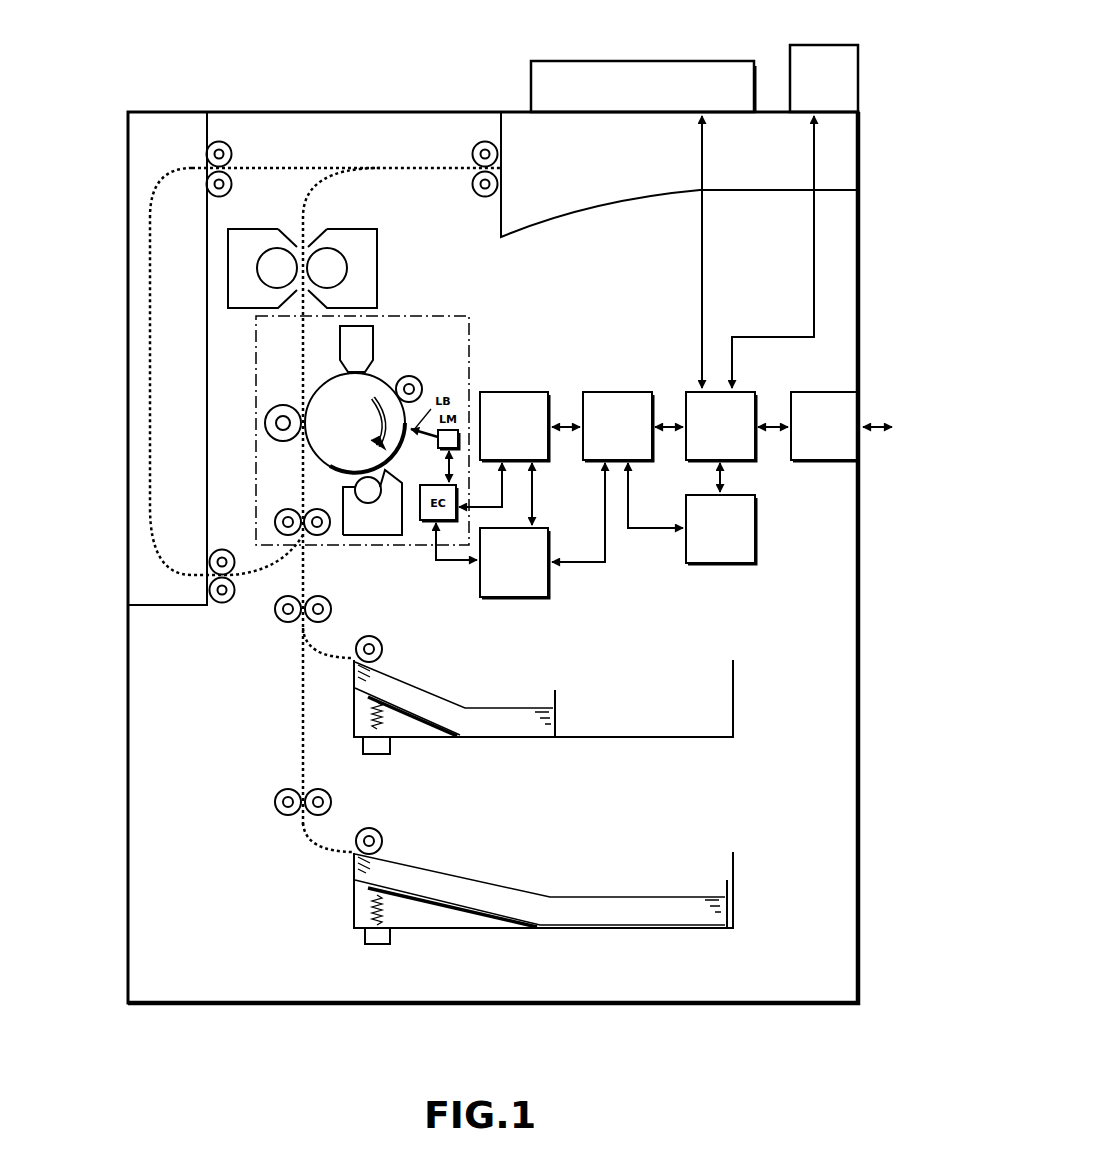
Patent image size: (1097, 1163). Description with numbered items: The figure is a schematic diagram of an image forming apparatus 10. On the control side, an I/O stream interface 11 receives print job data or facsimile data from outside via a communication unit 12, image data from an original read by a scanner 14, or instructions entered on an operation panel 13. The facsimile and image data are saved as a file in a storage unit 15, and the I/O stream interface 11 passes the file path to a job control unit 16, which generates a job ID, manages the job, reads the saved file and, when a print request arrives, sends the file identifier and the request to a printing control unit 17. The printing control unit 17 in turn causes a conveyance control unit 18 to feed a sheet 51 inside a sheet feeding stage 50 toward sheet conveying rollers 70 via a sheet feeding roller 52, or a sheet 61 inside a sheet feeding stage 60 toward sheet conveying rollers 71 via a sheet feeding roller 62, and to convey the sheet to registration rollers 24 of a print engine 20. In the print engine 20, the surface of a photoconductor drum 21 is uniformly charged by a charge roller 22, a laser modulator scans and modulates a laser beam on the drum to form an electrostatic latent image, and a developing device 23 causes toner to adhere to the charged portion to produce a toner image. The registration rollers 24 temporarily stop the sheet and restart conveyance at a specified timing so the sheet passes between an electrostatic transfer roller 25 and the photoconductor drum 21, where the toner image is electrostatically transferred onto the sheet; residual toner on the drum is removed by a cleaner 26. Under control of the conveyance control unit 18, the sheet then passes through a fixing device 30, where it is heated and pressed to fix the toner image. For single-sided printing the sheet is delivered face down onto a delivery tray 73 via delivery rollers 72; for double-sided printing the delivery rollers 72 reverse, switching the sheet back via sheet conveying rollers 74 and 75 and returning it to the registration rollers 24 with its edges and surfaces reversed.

The image forming apparatus 10 is at (386, 55).
The I/O stream interface 11 is at (753, 392).
The communication unit 12 is at (807, 428).
The operation panel 13 is at (823, 44).
The scanner 14 is at (643, 60).
The storage unit 15 is at (758, 522).
The job control unit 16 is at (602, 402).
The printing control unit 17 is at (500, 402).
The conveyance control unit 18 is at (538, 582).
The print engine 20 is at (413, 315).
The photoconductor drum 21 is at (375, 373).
The charge roller 22 is at (423, 383).
The developing device 23 is at (373, 540).
The registration rollers 24 is at (284, 510).
The electrostatic transfer roller 25 is at (282, 405).
The cleaner 26 is at (340, 338).
The fixing device 30 is at (377, 267).
The sheet feeding stage 50 is at (733, 877).
The sheet 51 is at (443, 870).
The sheet feeding roller 52 is at (383, 842).
The sheet feeding stage 60 is at (735, 685).
The sheet 61 is at (442, 693).
The sheet feeding roller 62 is at (383, 650).
The sheet conveying rollers 70 is at (277, 811).
The sheet conveying rollers 71 is at (279, 619).
The delivery rollers 72 is at (471, 152).
The delivery tray 73 is at (597, 205).
The sheet conveying rollers 74 is at (233, 153).
The sheet conveying rollers 75 is at (225, 548).